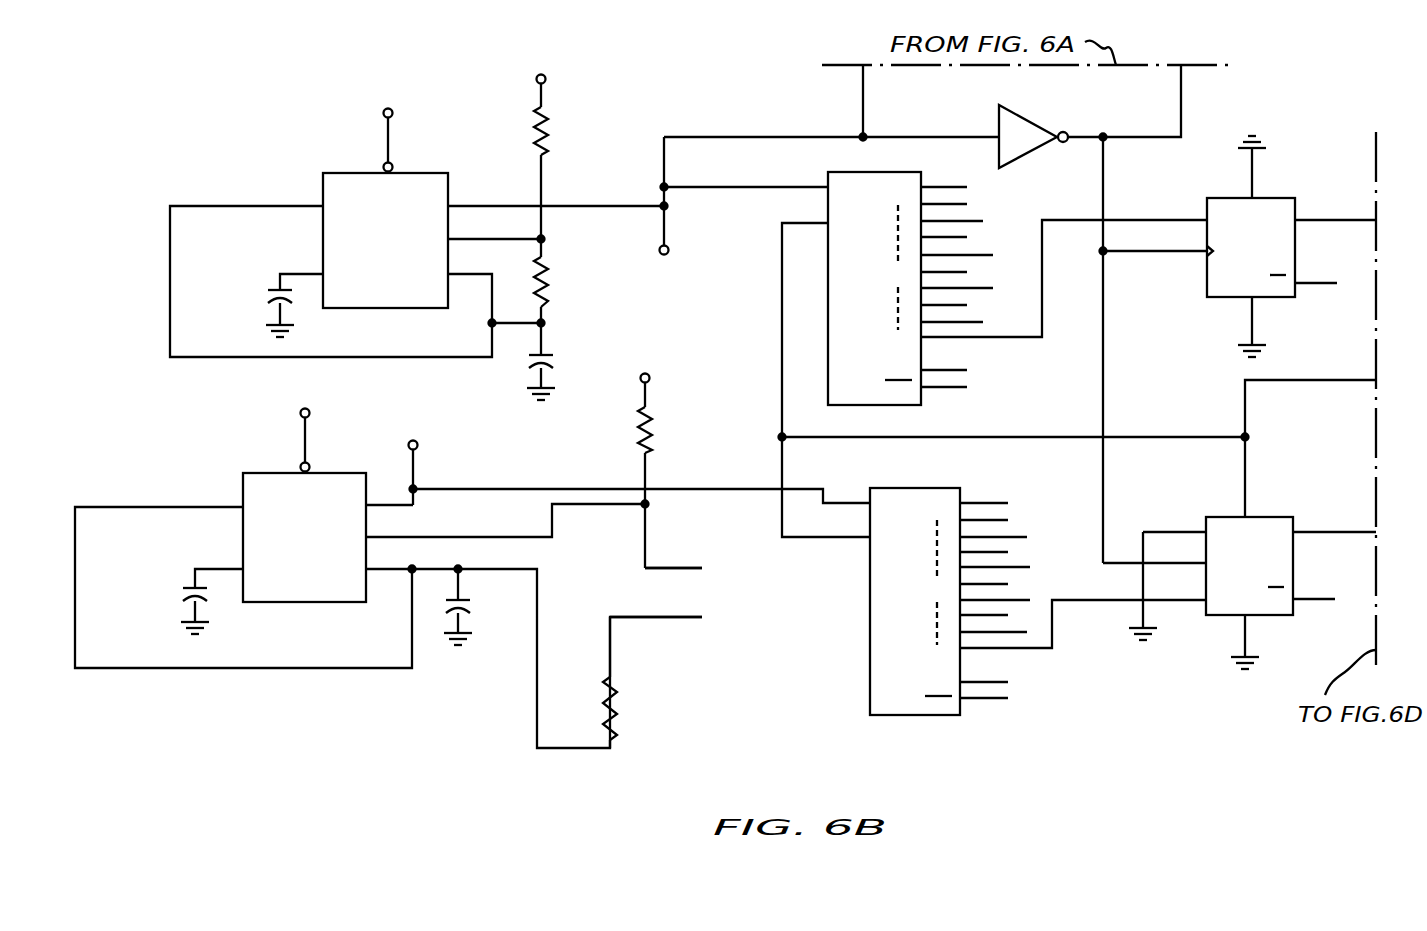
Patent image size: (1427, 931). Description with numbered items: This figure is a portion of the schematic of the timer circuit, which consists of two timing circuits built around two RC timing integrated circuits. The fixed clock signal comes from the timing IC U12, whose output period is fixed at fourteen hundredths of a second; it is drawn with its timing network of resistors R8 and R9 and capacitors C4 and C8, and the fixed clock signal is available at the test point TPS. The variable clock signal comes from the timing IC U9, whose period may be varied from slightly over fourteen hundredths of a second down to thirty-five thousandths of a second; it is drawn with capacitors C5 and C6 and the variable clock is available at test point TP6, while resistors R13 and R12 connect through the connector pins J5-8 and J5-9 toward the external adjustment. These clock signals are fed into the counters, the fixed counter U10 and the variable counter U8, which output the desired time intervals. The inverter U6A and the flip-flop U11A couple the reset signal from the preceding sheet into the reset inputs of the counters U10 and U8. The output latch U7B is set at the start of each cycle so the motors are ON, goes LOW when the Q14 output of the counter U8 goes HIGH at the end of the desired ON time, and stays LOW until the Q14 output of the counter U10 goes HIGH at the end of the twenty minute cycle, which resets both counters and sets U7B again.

The fixed RC timing IC U12 is at (384, 219).
The capacitor C4 is at (252, 305).
The resistor 16.7K R8 is at (571, 142).
The resistor 97K R9 is at (567, 281).
The capacitor 1uF C8 is at (564, 361).
The fixed clock signal test point TPS is at (687, 200).
The fixed 4060 counter U10 is at (905, 286).
The inverter 4049 U6A is at (1032, 134).
The D flip-flop 4013 U11A is at (1271, 246).
The variable RC timing IC U9 is at (301, 517).
The capacitor 0.01uF C5 is at (170, 597).
The capacitor 1uF C6 is at (484, 607).
The variable clock signal test point TP6 is at (437, 466).
The resistor 16.7K R13 is at (673, 458).
The connector pin J5-8 is at (673, 555).
The connector pin J5-9 is at (656, 604).
The resistor 18K R12 is at (635, 682).
The variable 4060 counter U8 is at (945, 600).
The output latch U7B is at (1265, 568).